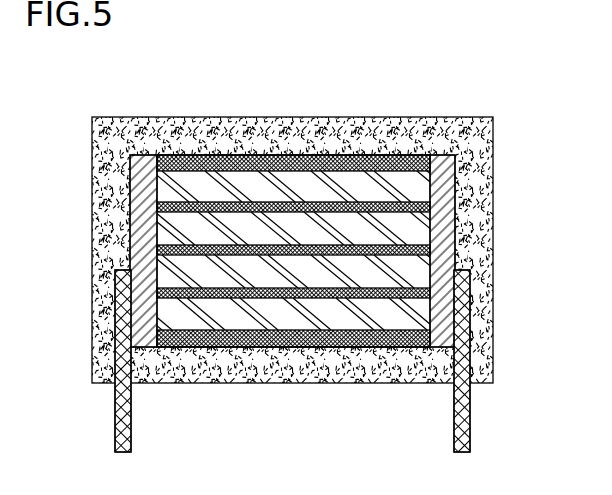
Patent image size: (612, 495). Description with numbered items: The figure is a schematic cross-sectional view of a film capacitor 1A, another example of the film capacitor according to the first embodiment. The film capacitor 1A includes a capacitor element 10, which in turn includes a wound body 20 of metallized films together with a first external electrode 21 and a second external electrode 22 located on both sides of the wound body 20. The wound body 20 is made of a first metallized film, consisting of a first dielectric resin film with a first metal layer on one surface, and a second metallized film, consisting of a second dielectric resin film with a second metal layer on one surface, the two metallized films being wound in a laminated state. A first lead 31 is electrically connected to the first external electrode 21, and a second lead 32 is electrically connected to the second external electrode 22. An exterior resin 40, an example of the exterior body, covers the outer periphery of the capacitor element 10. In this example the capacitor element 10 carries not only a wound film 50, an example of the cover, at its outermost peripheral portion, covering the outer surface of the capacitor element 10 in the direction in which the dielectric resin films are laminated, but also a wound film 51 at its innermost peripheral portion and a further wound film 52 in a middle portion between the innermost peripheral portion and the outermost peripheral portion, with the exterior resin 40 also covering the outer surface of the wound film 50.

The film capacitor 1A is at (522, 101).
The capacitor element 10 is at (468, 192).
The wound body 20 is at (183, 183).
The first external electrode 21 is at (143, 317).
The second external electrode 22 is at (443, 240).
The first lead 31 is at (117, 421).
The second lead 32 is at (463, 422).
The exterior resin 40 is at (375, 135).
The wound film 50 is at (230, 162).
The wound film 51 is at (157, 252).
The wound film 52 is at (157, 208).